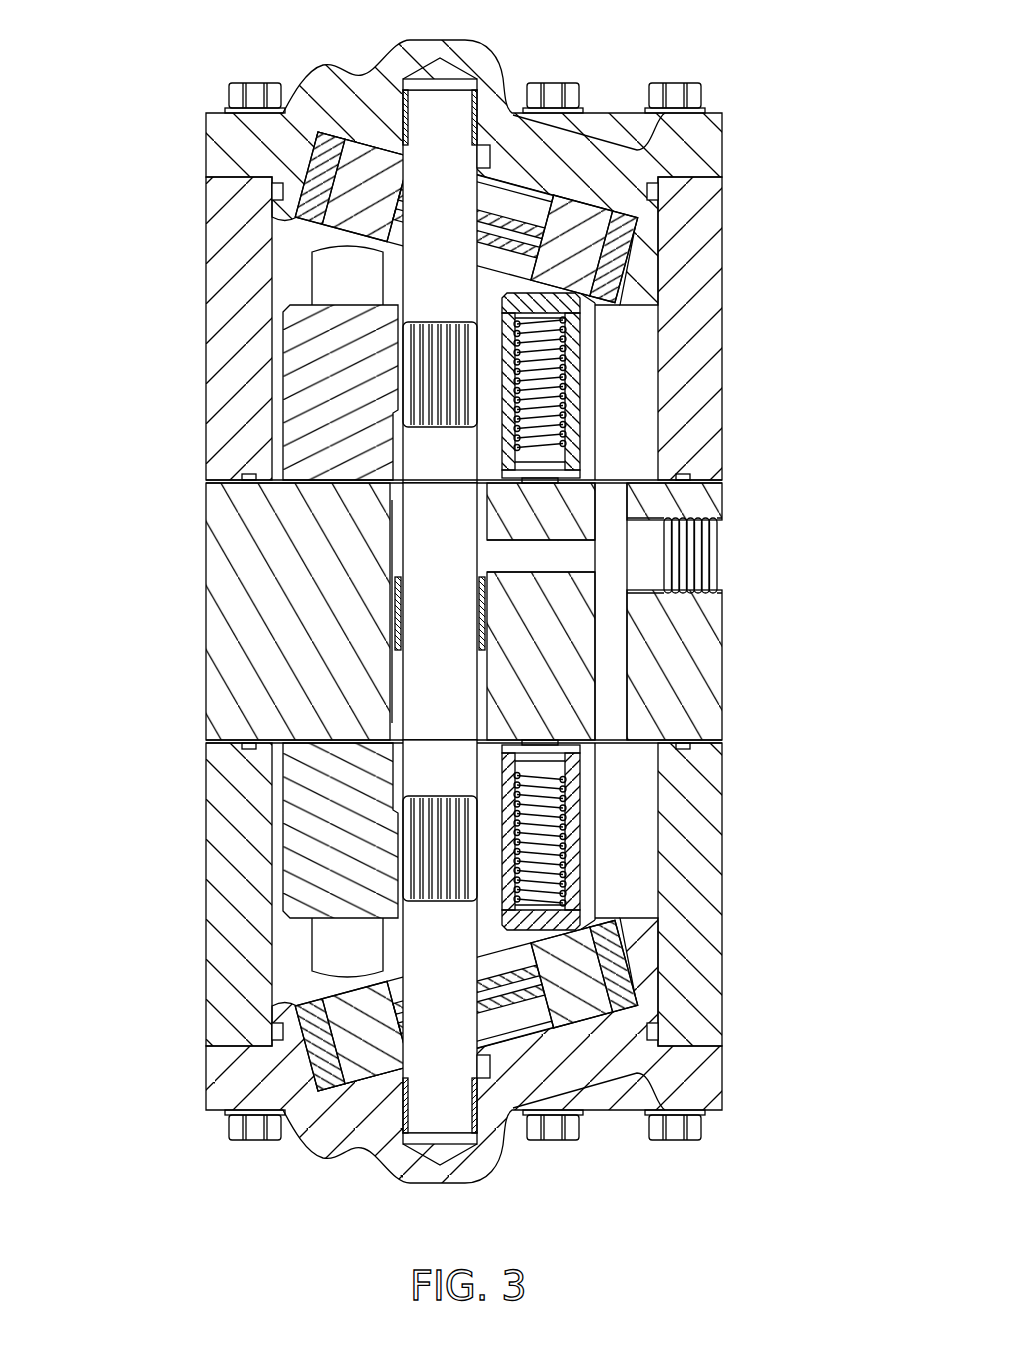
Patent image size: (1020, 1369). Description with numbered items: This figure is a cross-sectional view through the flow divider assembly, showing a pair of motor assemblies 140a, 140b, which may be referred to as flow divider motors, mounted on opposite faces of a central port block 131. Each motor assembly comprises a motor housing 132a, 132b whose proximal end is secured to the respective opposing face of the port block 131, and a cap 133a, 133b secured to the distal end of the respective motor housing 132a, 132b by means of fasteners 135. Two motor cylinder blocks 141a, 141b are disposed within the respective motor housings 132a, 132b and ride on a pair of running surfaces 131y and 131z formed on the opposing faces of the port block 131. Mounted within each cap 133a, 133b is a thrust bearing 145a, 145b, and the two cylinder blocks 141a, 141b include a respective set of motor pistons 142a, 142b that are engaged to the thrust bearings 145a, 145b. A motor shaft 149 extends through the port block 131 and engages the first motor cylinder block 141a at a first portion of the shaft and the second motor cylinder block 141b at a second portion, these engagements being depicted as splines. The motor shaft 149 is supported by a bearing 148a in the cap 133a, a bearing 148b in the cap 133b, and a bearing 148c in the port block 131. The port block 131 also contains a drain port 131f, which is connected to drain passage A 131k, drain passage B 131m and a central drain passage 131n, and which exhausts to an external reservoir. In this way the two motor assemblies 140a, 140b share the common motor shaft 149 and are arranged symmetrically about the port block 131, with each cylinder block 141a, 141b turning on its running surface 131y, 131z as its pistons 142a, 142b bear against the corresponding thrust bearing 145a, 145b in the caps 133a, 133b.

The fasteners 135 is at (682, 82).
The cap 133a is at (690, 147).
The motor assembly 140a is at (435, 270).
The thrust bearing 145a is at (605, 232).
The motor housing 132a is at (232, 297).
The motor cylinder block 141a is at (305, 372).
The motor pistons 142a is at (550, 303).
The bearing 148a is at (407, 115).
The running surface 131y is at (312, 480).
The port block 131 is at (473, 611).
The drain passage A 131k is at (603, 505).
The central drain passage 131n is at (527, 542).
The drain port 131f is at (720, 590).
The drain passage B 131m is at (600, 655).
The bearing 148c is at (399, 603).
The motor shaft 149 is at (458, 696).
The running surface 131z is at (312, 745).
The motor cylinder block 141b is at (305, 852).
The motor pistons 142b is at (550, 922).
The motor housing 132b is at (232, 928).
The thrust bearing 145b is at (605, 995).
The motor assembly 140b is at (435, 952).
The bearing 148b is at (405, 1107).
The cap 133b is at (692, 1080).